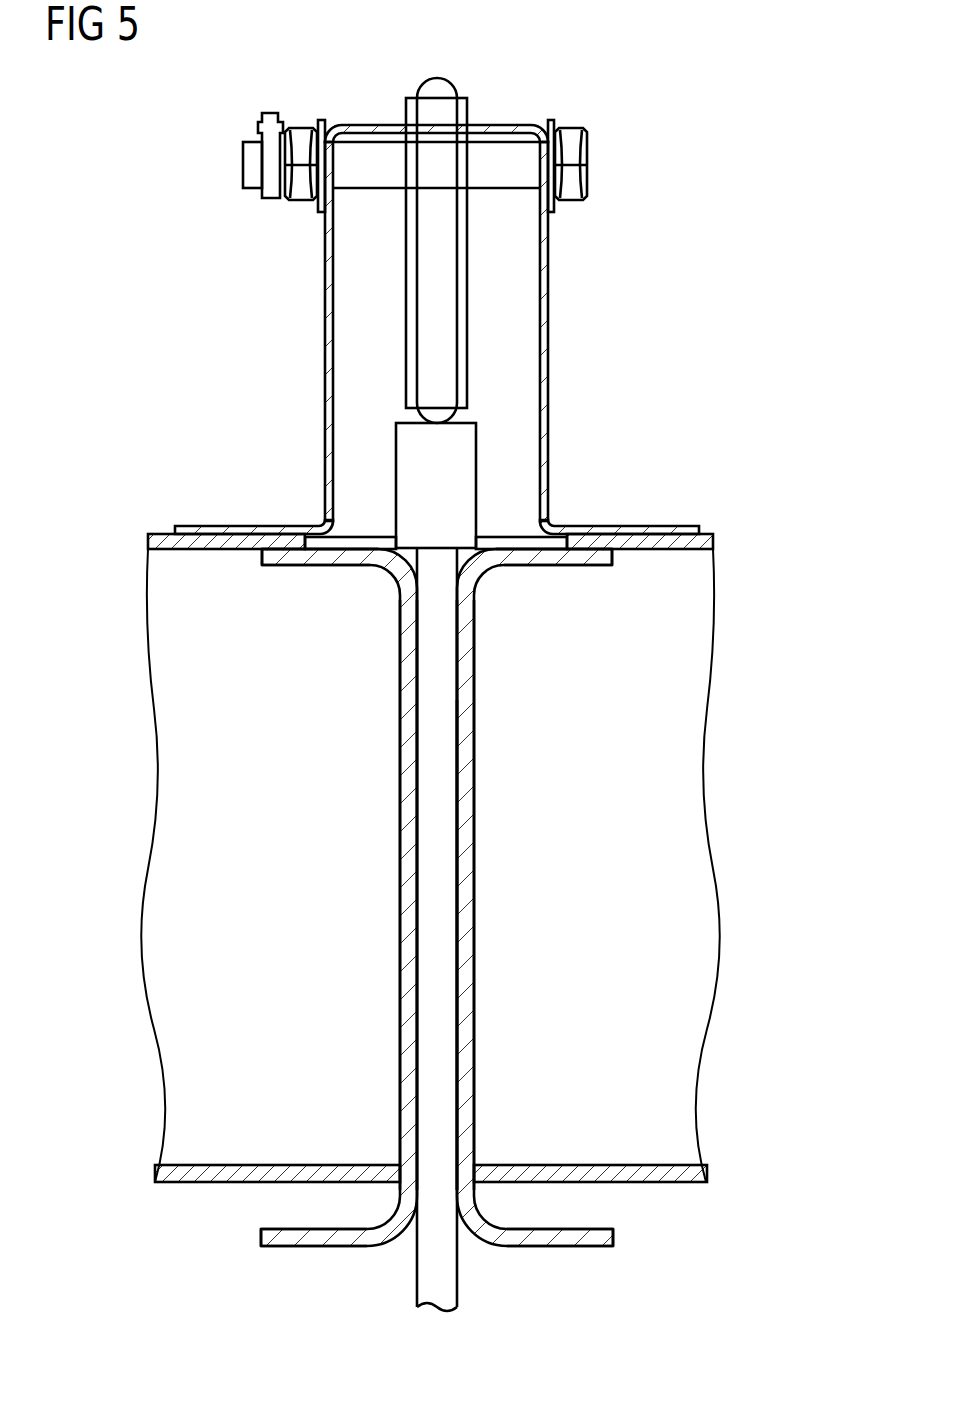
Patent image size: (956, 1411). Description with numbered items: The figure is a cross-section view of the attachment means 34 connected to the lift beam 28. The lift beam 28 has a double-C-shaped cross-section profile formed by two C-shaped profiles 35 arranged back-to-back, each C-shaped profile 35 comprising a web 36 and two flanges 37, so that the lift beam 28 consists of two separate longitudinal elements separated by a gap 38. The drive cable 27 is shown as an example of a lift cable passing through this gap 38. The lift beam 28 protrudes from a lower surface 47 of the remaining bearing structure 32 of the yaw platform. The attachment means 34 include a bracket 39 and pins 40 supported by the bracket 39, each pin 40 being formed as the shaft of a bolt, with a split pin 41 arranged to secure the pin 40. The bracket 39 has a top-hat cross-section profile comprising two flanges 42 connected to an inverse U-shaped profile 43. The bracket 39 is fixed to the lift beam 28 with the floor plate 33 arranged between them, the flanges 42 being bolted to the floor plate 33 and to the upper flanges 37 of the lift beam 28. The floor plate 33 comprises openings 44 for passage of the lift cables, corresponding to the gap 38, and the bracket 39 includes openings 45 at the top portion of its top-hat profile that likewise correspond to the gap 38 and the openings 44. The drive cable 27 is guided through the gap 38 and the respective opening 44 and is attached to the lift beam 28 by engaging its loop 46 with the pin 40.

The drive cable 27 is at (440, 983).
The lift beam 28 is at (408, 718).
The bearing structure 32 is at (172, 957).
The floor plate 33 is at (165, 538).
The attachment means 34 is at (715, 80).
The C-shaped profile 35 is at (460, 715).
The web 36 is at (399, 882).
The flange 37 is at (278, 557).
The gap 38 is at (457, 928).
The bracket 39 is at (548, 362).
The pin 40 is at (588, 163).
The split pin 41 is at (257, 130).
The flange 42 is at (247, 528).
The inverse U-shaped profile 43 is at (325, 345).
The opening 44 is at (500, 540).
The opening 45 is at (485, 130).
The loop 46 is at (407, 270).
The lower surface 47 is at (198, 1187).